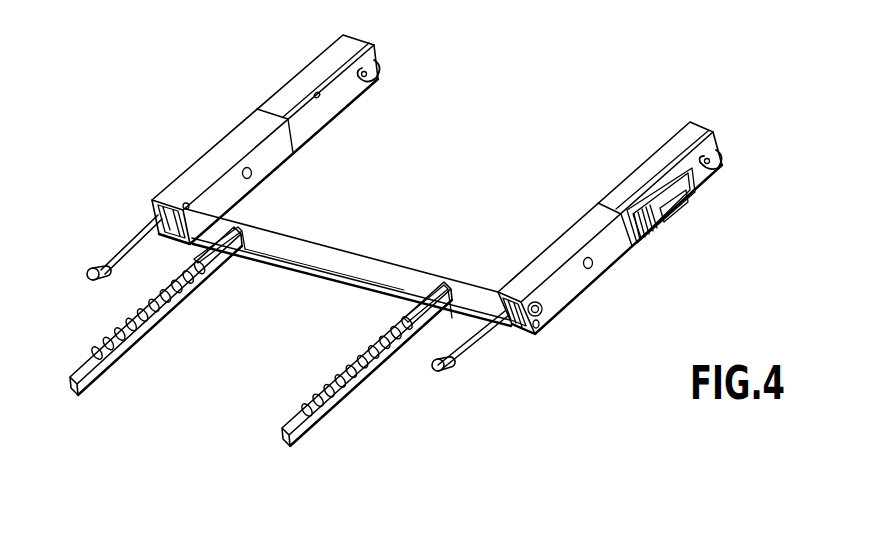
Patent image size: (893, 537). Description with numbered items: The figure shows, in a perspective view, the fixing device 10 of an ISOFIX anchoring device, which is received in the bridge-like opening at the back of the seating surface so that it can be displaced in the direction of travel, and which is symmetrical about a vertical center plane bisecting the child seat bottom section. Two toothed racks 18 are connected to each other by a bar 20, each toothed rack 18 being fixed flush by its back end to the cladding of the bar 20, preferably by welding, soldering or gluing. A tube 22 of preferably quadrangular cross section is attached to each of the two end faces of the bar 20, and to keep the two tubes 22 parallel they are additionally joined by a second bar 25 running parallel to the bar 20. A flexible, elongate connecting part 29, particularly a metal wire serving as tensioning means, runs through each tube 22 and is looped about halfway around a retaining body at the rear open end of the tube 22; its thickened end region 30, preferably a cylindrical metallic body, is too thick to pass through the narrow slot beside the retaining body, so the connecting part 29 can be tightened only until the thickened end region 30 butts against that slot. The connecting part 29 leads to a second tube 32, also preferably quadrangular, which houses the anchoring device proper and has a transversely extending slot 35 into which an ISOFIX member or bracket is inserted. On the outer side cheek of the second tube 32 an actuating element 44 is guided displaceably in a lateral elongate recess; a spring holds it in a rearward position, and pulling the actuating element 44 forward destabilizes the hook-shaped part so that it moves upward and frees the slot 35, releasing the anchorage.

The fixing device 10 is at (118, 138).
The toothed rack 18 is at (128, 343).
The bar 20 is at (393, 270).
The tube 22 is at (193, 177).
The second bar 25 is at (325, 278).
The connecting part 29 is at (123, 252).
The thickened end region 30 is at (90, 281).
The second tube 32 is at (293, 90).
The slot 35 is at (715, 150).
The actuating element 44 is at (667, 218).